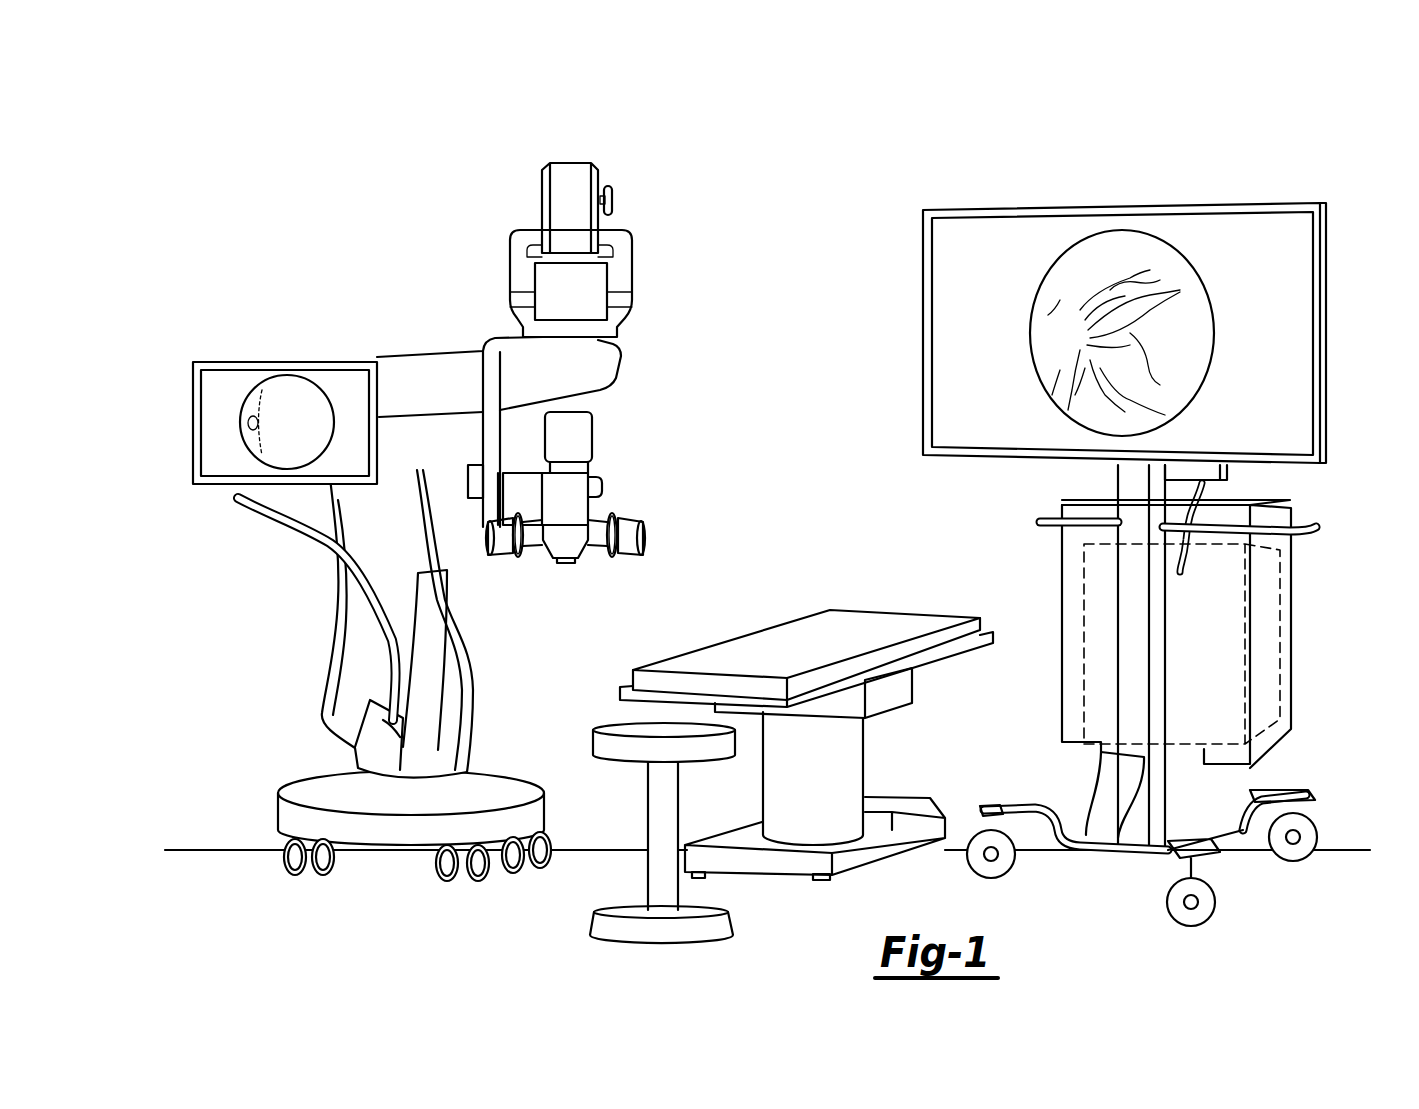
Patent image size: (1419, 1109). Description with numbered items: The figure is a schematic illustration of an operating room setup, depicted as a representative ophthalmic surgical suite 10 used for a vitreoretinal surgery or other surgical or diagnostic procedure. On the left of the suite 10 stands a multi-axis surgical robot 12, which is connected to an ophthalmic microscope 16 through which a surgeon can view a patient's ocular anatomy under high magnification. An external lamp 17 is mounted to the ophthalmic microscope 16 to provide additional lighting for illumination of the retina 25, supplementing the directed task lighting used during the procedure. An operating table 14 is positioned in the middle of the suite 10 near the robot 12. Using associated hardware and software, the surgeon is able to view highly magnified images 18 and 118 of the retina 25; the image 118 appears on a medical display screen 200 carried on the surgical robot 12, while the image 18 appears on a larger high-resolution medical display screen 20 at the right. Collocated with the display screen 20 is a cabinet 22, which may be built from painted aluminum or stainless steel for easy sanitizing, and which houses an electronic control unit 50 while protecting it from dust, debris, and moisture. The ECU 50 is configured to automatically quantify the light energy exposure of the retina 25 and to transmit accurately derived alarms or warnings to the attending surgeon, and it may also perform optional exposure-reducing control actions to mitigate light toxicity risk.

The ophthalmic surgical suite 10 is at (450, 138).
The multi-axis surgical robot 12 is at (345, 319).
The operating table 14 is at (758, 653).
The ophthalmic microscope 16 is at (651, 454).
The external lamp 17 is at (567, 566).
The magnified image 18 is at (1075, 238).
The medical display screen 20 is at (1296, 162).
The cabinet 22 is at (1292, 602).
The retina 25 is at (250, 423).
The electronic control unit (ECU) 50 is at (1267, 678).
The magnified image 118 is at (242, 447).
The medical display screen 200 is at (205, 329).